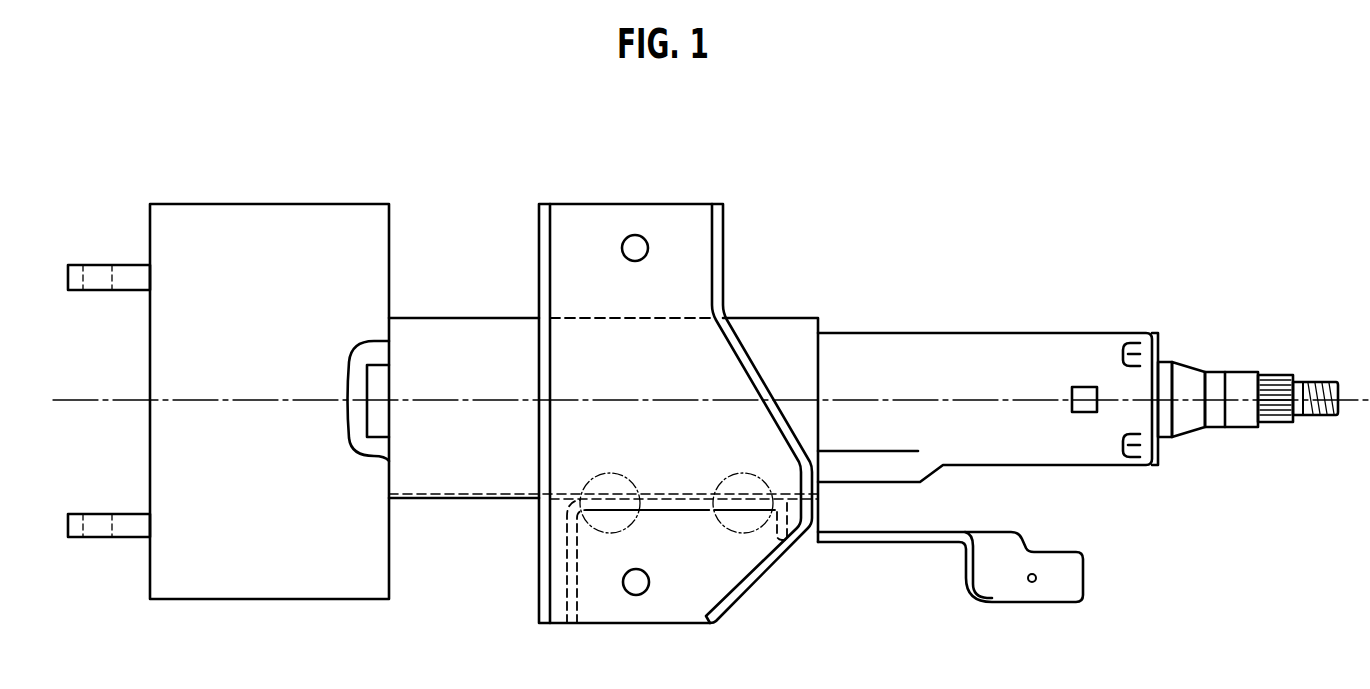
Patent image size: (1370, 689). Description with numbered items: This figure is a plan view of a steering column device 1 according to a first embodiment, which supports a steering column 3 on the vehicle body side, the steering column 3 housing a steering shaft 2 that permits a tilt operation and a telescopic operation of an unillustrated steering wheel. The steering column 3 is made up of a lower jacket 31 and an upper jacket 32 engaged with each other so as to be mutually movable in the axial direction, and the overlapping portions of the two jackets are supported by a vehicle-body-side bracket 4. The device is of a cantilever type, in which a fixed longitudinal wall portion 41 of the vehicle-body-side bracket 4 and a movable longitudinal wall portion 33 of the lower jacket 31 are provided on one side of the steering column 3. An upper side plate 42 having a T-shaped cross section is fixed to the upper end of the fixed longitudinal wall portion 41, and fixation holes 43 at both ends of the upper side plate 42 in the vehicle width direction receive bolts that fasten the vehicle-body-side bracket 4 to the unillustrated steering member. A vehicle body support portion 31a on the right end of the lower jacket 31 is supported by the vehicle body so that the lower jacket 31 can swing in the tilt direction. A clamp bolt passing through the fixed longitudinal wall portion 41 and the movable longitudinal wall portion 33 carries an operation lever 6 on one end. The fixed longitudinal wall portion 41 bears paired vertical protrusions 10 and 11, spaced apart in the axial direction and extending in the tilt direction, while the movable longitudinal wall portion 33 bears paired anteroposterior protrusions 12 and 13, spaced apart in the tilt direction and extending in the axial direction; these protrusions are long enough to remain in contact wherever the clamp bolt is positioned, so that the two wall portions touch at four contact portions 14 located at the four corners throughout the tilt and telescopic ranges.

The steering column device 1 is at (852, 218).
The steering shaft 2 is at (1242, 418).
The steering column 3 is at (908, 332).
The vehicle-body-side bracket 4 is at (580, 233).
The operation lever 6 is at (887, 543).
The vertical protrusion 10 is at (605, 490).
The vertical protrusion 11 is at (740, 497).
The anteroposterior protrusion 12 is at (603, 531).
The anteroposterior protrusion 13 is at (498, 538).
The contact portion 14 is at (635, 517).
The lower jacket 31 is at (462, 337).
The vehicle body support portion 31a is at (104, 266).
The upper jacket 32 is at (975, 347).
The movable longitudinal wall portion 33 is at (415, 500).
The fixed longitudinal wall portion 41 is at (697, 503).
The upper side plate 42 is at (723, 363).
The fixation hole 43 is at (645, 248).